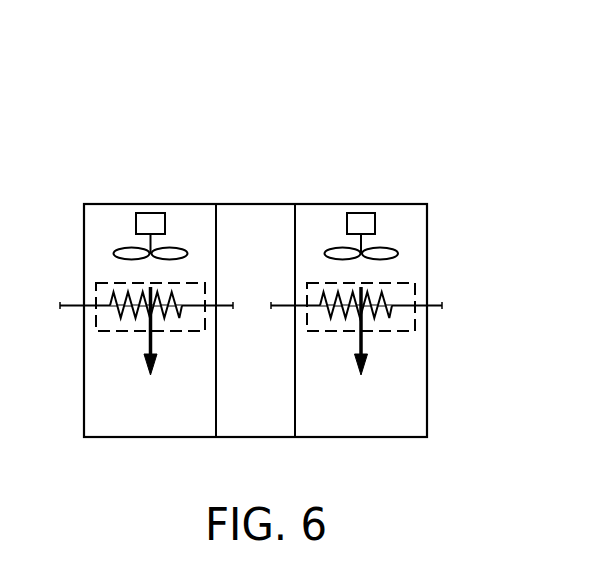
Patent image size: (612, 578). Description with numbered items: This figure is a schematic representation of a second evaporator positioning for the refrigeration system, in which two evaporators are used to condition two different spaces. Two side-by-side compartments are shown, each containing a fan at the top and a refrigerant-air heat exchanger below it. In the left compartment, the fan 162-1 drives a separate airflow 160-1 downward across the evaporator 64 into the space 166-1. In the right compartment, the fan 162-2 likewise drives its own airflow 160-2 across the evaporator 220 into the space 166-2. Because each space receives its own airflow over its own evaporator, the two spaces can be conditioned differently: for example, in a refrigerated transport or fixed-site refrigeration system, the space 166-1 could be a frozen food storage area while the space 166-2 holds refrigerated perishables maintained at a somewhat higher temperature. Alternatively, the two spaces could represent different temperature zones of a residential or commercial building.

The evaporator 64 is at (110, 351).
The airflow 160-1 is at (153, 345).
The airflow 160-2 is at (363, 342).
The fan 162-1 is at (180, 205).
The fan 162-2 is at (386, 206).
The space 166-1 is at (181, 422).
The space 166-2 is at (394, 422).
The evaporator 220 is at (402, 267).